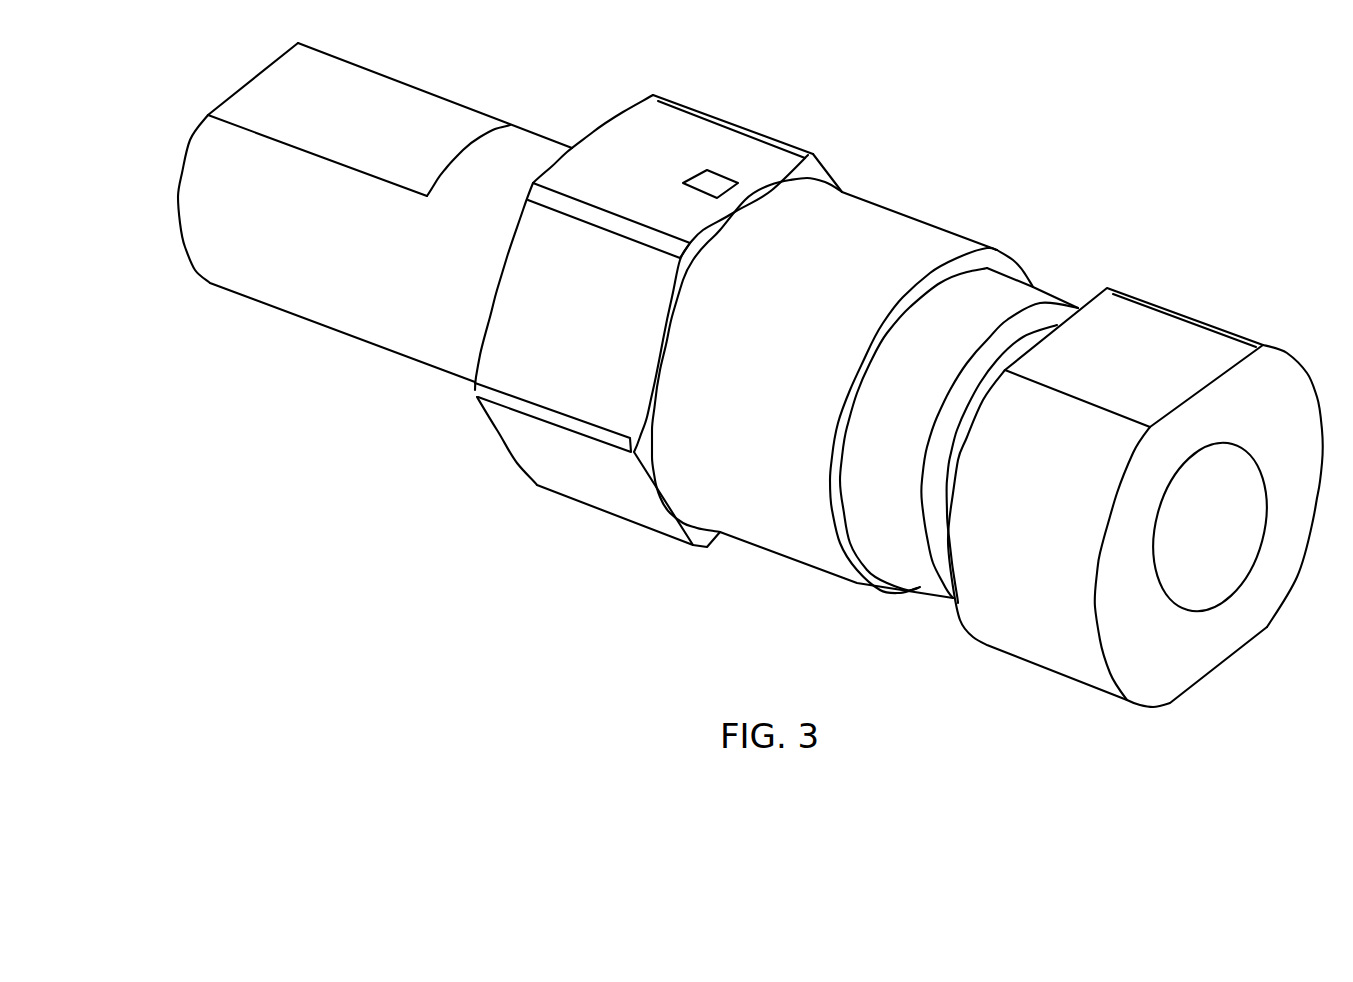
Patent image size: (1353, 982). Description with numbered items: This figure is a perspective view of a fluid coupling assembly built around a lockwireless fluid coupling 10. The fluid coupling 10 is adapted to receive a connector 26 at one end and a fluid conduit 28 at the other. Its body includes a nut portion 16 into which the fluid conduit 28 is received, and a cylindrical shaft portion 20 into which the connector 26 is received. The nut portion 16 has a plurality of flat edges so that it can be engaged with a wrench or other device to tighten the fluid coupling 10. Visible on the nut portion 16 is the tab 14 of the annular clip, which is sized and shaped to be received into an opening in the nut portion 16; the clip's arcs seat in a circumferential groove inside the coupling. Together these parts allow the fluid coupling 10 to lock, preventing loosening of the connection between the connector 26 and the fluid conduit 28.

The fluid coupling 10 is at (900, 190).
The tab 14 is at (714, 187).
The nut portion 16 is at (578, 483).
The cylindrical shaft portion 20 is at (777, 533).
The connector 26 is at (1197, 293).
The fluid conduit 28 is at (327, 368).